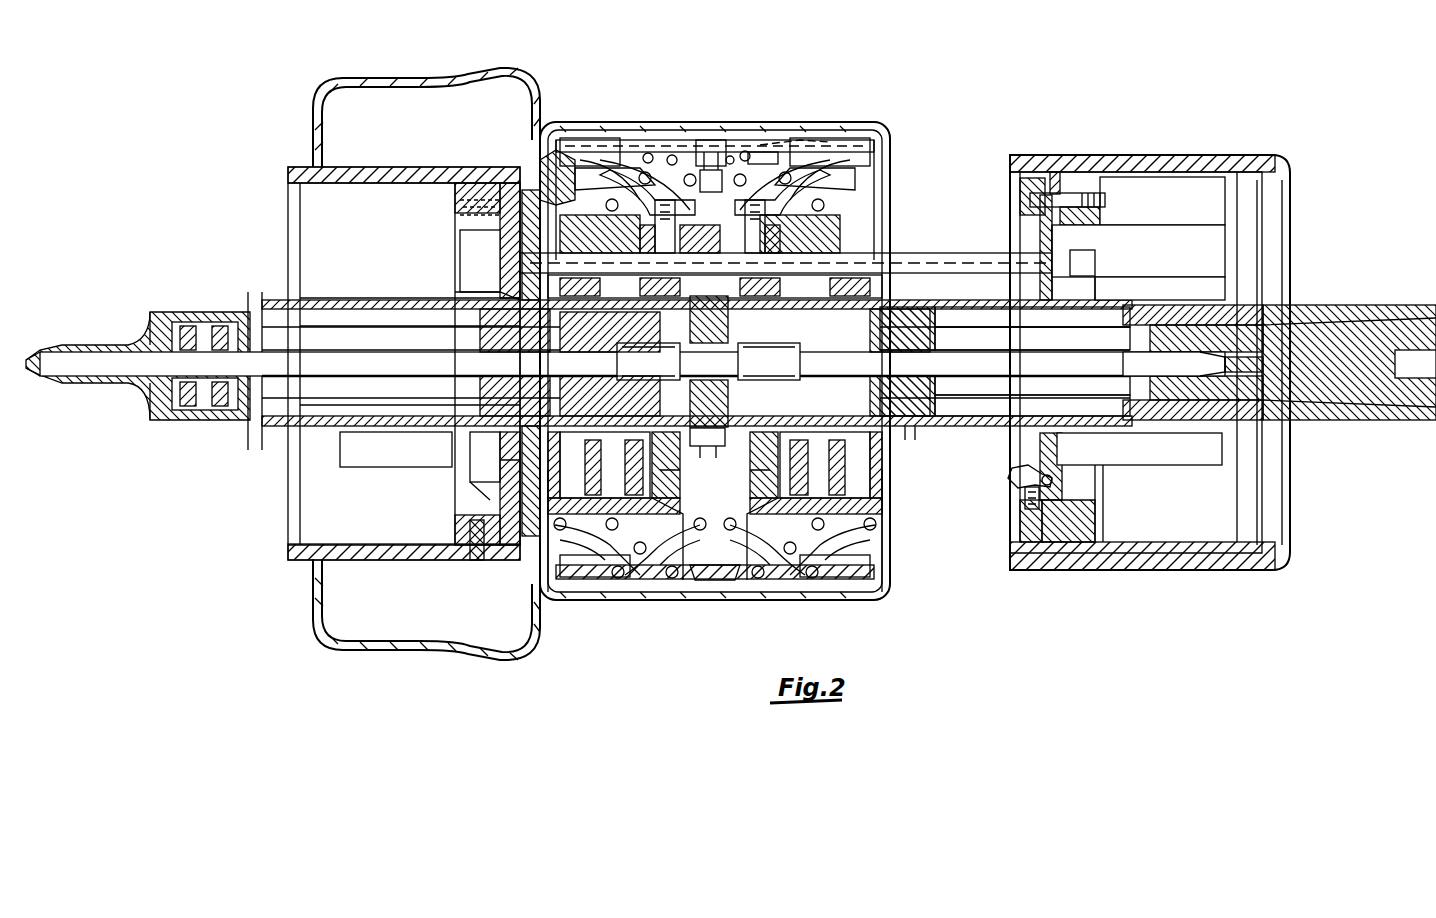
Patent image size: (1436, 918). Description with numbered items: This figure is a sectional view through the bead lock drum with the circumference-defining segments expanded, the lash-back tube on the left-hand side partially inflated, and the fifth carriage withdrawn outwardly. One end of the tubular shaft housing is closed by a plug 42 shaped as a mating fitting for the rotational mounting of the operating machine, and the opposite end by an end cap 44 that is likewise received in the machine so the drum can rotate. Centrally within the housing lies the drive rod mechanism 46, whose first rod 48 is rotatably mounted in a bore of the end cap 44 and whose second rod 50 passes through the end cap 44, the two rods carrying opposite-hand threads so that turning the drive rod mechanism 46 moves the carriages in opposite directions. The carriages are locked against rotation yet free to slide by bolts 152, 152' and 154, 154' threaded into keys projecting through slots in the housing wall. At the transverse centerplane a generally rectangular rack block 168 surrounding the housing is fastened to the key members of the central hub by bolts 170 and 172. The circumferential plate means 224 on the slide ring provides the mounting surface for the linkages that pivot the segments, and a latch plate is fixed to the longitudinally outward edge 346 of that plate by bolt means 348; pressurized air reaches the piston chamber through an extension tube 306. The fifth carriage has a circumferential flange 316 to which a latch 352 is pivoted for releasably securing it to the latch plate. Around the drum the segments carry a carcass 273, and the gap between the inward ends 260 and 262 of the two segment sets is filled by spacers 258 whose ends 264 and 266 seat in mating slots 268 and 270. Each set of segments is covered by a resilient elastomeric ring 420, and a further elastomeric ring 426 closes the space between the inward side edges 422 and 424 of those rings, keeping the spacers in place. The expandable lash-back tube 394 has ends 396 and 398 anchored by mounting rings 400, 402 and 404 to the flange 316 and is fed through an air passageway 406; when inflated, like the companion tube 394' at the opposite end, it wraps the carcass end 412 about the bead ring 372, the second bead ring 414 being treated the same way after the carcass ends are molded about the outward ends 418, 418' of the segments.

The plug 42 is at (1366, 306).
The end cap 44 is at (92, 342).
The drive rod mechanism 46 is at (318, 400).
The first rod 48 is at (1038, 362).
The second rod 50 is at (372, 357).
The bolt 152 is at (1005, 330).
The support plate 152' is at (1005, 424).
The bolt 154 is at (414, 363).
The housing 154' is at (472, 466).
The rack block 168 is at (742, 462).
The bolt 170 is at (535, 276).
The bolt 172 is at (703, 446).
The circumferential plate means 224 is at (880, 200).
The spacers 258 is at (712, 148).
The inward end of segment 260 is at (750, 154).
The inward end of segment 262 is at (670, 152).
The spacer end 264 is at (722, 160).
The spacer end 266 is at (690, 146).
The mating slot 268 is at (729, 152).
The mating slot 270 is at (703, 146).
The carcass 273 is at (794, 140).
The extension tube 306 is at (944, 262).
The circumferential flange 316 is at (1038, 228).
The longitudinally outward edge 346 is at (882, 508).
The bolt means 348 is at (880, 228).
The latch 352 is at (1010, 482).
The bead ring 372 is at (882, 166).
The expandable lash-back tube 394 is at (1150, 343).
The expandable lash-back tube 394' is at (426, 100).
The tube end 396 is at (1090, 174).
The tube end 398 is at (1055, 172).
The mounting ring 400 is at (1102, 200).
The mounting ring 402 is at (1078, 222).
The mounting ring 404 is at (1062, 218).
The air passageway 406 is at (480, 562).
The carcass end 412 is at (884, 128).
The second bead ring 414 is at (542, 132).
The outward ends of segments 418 is at (752, 200).
The casing wall 418' is at (595, 126).
The resilient elastomeric ring 420 is at (690, 196).
The inward side edge 422 is at (866, 136).
The inward side edge 424 is at (646, 150).
The further elastomeric ring 426 is at (740, 152).